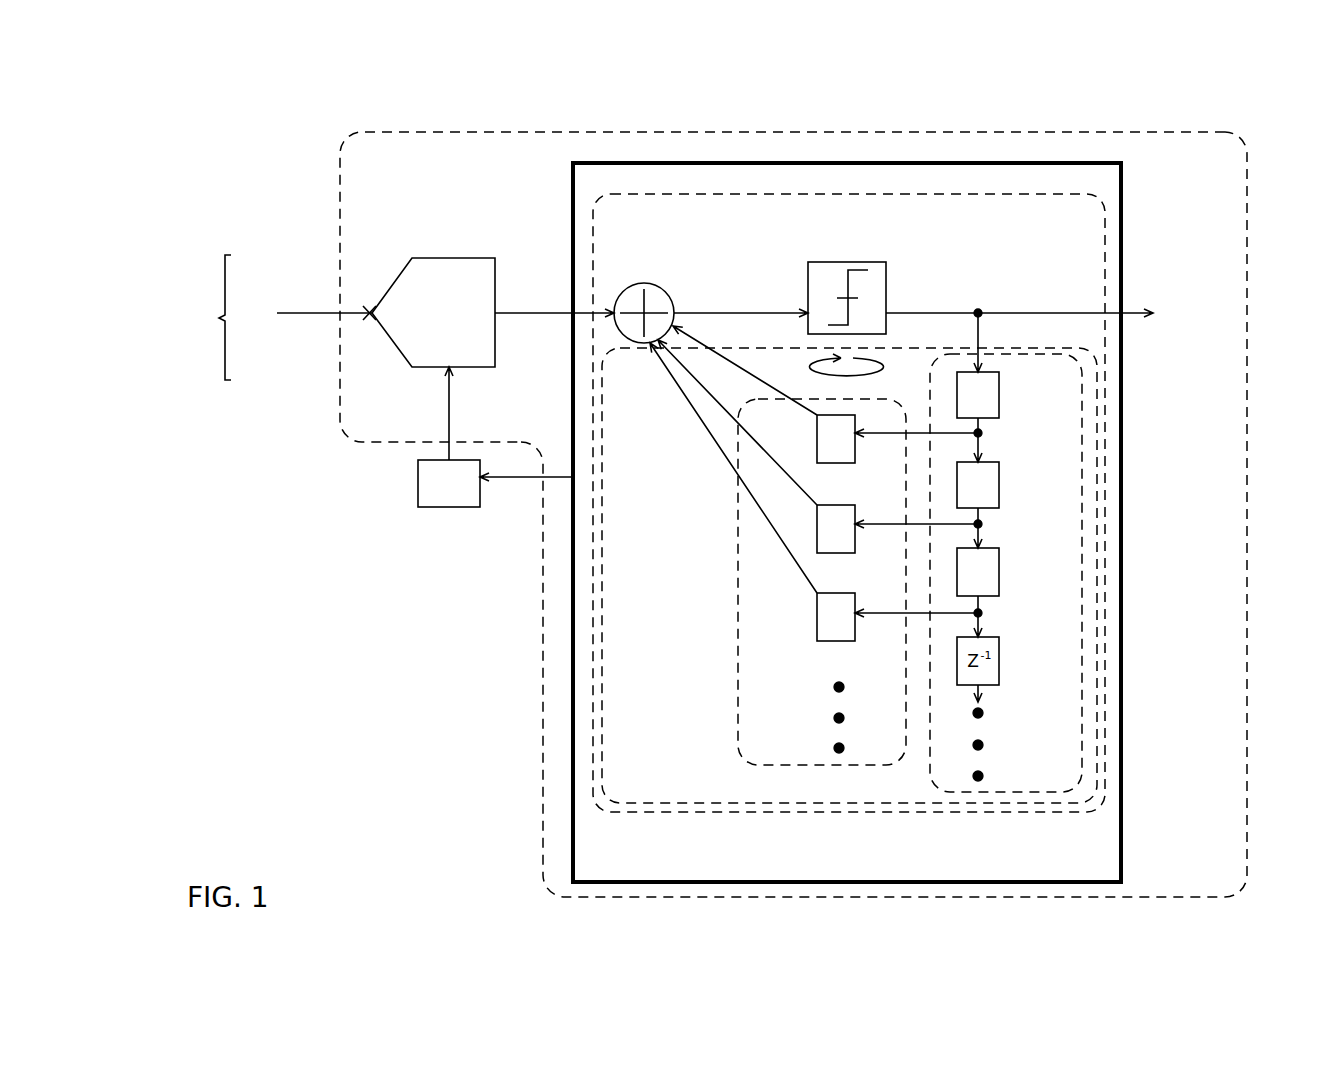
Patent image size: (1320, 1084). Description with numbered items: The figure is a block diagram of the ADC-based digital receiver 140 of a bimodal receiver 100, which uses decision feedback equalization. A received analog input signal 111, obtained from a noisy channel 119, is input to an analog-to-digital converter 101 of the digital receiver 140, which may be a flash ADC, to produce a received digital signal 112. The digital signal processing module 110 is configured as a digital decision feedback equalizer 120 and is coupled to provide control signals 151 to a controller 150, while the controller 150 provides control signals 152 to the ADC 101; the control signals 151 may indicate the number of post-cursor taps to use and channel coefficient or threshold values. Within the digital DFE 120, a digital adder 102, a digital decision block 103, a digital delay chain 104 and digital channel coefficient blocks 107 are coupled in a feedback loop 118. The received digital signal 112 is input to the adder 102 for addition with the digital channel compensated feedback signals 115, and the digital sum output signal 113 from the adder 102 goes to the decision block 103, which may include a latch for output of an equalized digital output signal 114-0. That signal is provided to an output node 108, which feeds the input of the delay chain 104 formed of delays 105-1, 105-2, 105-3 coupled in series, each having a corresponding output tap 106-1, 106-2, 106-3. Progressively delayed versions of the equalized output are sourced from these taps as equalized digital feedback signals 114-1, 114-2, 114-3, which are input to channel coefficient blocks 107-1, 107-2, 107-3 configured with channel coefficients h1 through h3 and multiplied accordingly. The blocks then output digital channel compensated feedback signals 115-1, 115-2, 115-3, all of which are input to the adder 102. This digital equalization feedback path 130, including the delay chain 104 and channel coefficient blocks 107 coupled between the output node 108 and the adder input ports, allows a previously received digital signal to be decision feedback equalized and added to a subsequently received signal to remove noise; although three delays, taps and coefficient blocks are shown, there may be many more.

The bimodal receiver 100 is at (299, 128).
The analog-to-digital converter 101 is at (433, 312).
The digital adder 102 is at (657, 283).
The digital decision block 103 is at (890, 279).
The digital delay chain 104 is at (928, 387).
The delay 105-1 is at (1000, 407).
The delay 105-2 is at (1000, 489).
The delay 105-3 is at (1000, 580).
The output tap 106-1 is at (990, 436).
The output tap 106-2 is at (990, 527).
The output tap 106-3 is at (990, 616).
The digital channel coefficient blocks 107 is at (737, 564).
The channel coefficient block 107-1 is at (814, 456).
The channel coefficient block 107-2 is at (814, 537).
The channel coefficient block 107-3 is at (814, 613).
The output node 108 is at (985, 310).
The digital signal processing module 110 is at (847, 522).
The received analog input signal 111 is at (305, 312).
The received digital signal 112 is at (548, 312).
The digital sum output signal 113 is at (698, 313).
The equalized digital output signal 114-0 is at (1136, 311).
The equalized digital feedback signal 114-1 is at (885, 436).
The equalized digital feedback signal 114-2 is at (885, 528).
The equalized digital feedback signal 114-3 is at (885, 618).
The digital channel compensated feedback signals 115 is at (714, 459).
The digital channel compensated feedback signal 115-1 is at (657, 350).
The digital channel compensated feedback signal 115-2 is at (688, 368).
The digital channel compensated feedback signal 115-3 is at (722, 455).
The feedback loop 118 is at (886, 365).
The noisy channel 119 is at (204, 317).
The digital decision feedback equalizer 120 is at (779, 813).
The digital equalization feedback path 130 is at (603, 733).
The digital receiver 140 is at (541, 732).
The controller 150 is at (449, 483).
The control signals 151 is at (528, 480).
The control signals 152 is at (447, 419).